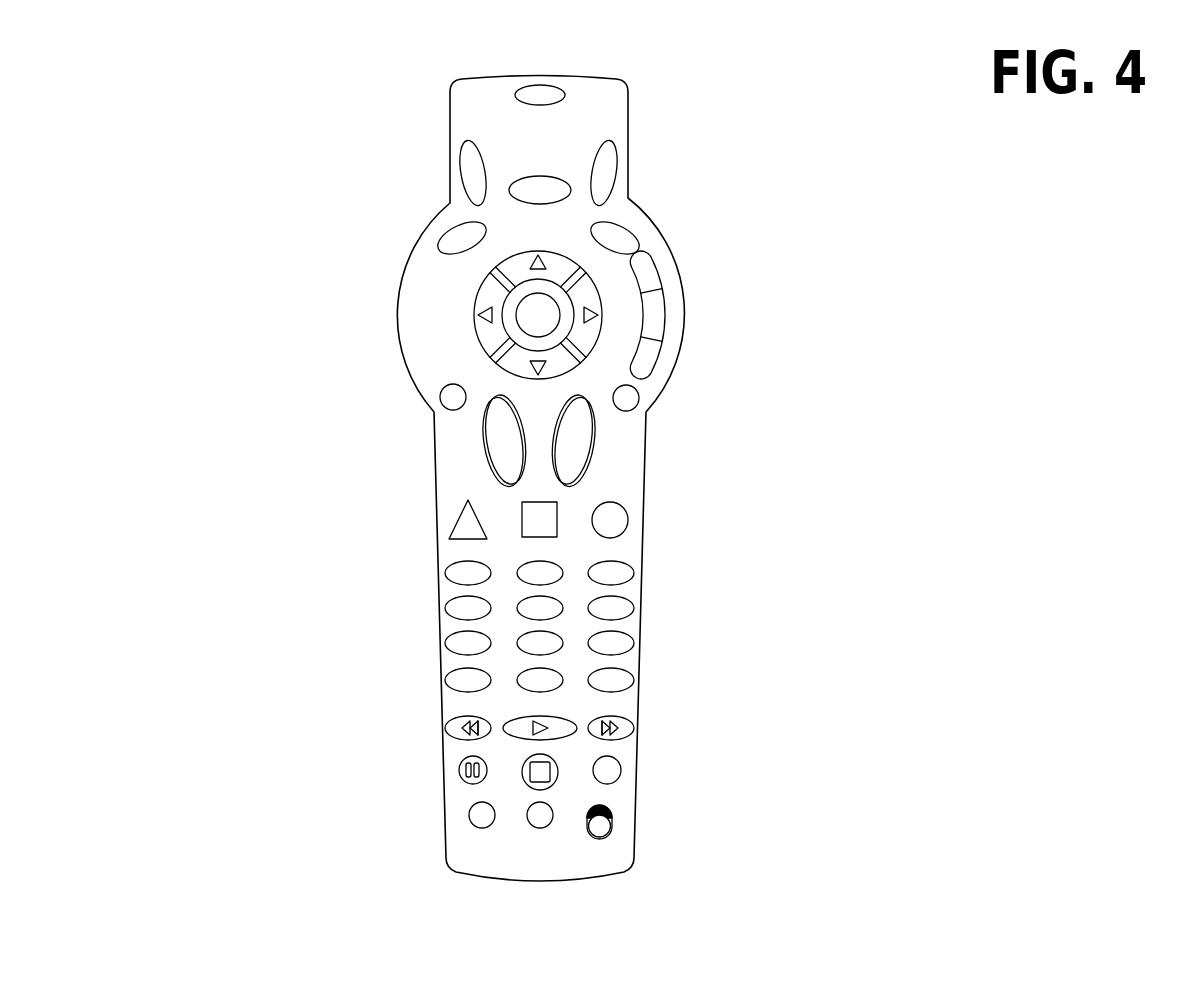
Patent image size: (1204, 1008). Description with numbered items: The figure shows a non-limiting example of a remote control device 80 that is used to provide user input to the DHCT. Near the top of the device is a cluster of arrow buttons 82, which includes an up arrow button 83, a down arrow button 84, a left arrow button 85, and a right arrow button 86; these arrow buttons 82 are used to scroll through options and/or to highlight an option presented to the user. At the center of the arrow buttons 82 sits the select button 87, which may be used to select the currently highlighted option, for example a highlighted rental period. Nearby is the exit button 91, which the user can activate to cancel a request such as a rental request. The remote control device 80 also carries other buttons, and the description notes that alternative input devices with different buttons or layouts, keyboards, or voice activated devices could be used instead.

The remote control device 80 is at (230, 189).
The arrow buttons 82 is at (823, 365).
The up arrow button 83 is at (563, 258).
The down arrow button 84 is at (563, 362).
The left arrow button 85 is at (497, 346).
The right arrow button 86 is at (638, 243).
The select button 87 is at (536, 314).
The exit button 91 is at (630, 402).